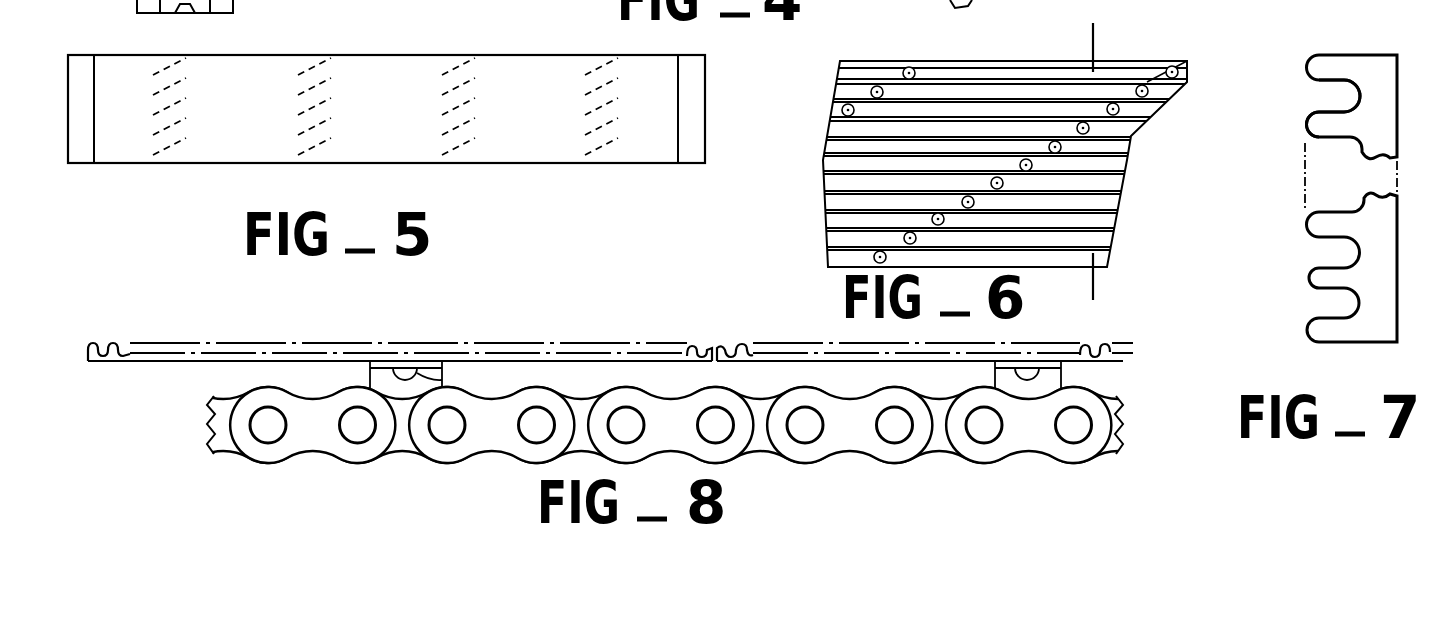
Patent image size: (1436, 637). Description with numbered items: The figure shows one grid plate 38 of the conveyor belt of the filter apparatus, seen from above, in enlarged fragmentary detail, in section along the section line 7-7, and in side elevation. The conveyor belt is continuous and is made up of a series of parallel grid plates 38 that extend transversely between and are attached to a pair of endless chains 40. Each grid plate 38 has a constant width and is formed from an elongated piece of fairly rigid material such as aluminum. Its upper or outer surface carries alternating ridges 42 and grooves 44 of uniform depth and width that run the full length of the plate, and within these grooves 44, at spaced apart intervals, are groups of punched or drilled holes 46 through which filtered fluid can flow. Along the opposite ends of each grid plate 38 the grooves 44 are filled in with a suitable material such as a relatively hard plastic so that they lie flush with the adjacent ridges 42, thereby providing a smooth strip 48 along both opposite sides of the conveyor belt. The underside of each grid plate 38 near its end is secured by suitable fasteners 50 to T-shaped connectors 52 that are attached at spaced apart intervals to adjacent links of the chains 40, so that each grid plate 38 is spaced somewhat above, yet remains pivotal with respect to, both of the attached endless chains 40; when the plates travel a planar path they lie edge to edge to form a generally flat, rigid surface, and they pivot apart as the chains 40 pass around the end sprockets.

In FIG. 5, the grid plate 38 is at (420, 57).
In FIG. 5, the holes 46 is at (600, 70).
In FIG. 6, the holes 46 is at (1148, 85).
In FIG. 5, the smooth strip 48 is at (695, 90).
In FIG. 6, the section line 7- 7 is at (1097, 33).
In FIG. 7, the grooves 44 is at (1358, 94).
In FIG. 7, the ridges 42 is at (1306, 128).
In FIG. 8, the endless chains 40 is at (671, 441).
In FIG. 8, the fasteners 50 is at (442, 386).
In FIG. 8, the T-shaped connectors 52 is at (392, 453).